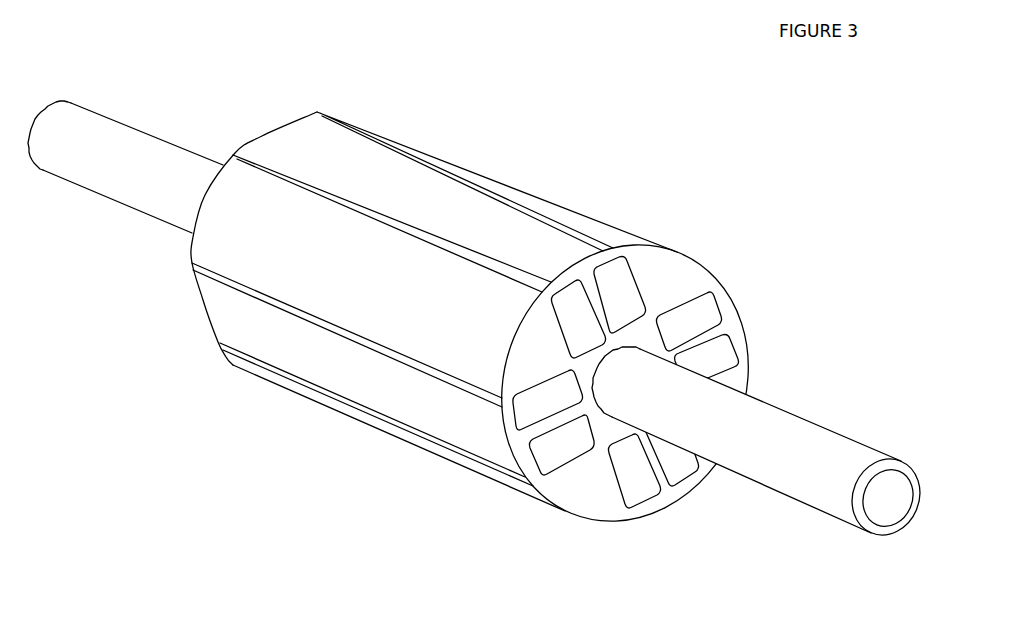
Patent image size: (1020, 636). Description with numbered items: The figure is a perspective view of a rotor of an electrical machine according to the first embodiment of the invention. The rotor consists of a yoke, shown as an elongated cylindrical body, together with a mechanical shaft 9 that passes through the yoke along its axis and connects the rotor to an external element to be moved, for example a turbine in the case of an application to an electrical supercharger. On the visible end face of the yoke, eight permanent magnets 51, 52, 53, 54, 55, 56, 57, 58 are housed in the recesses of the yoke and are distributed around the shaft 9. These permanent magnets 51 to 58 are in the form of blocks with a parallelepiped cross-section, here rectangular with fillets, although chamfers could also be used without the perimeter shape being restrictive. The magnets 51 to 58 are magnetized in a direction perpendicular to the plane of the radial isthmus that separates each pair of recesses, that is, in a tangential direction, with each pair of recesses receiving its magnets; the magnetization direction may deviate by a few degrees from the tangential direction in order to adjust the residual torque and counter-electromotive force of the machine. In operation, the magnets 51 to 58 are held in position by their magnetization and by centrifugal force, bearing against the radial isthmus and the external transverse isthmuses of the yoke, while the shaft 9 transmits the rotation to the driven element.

The mechanical shaft 9 is at (808, 447).
The permanent magnet 51 is at (527, 407).
The permanent magnet 52 is at (563, 448).
The permanent magnet 53 is at (625, 482).
The permanent magnet 54 is at (683, 458).
The permanent magnet 55 is at (728, 355).
The permanent magnet 56 is at (712, 317).
The permanent magnet 57 is at (615, 287).
The permanent magnet 58 is at (573, 330).